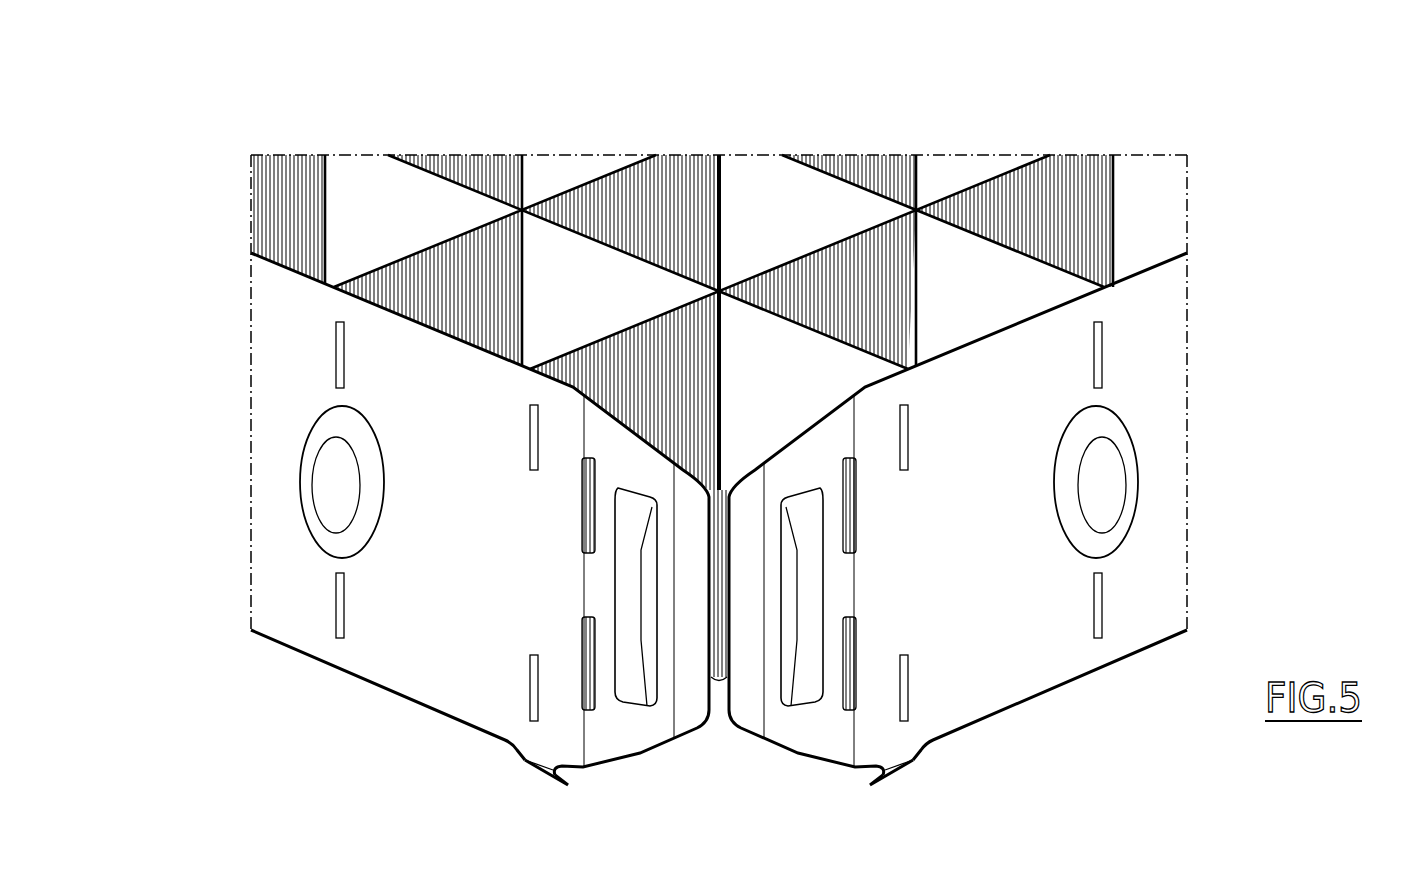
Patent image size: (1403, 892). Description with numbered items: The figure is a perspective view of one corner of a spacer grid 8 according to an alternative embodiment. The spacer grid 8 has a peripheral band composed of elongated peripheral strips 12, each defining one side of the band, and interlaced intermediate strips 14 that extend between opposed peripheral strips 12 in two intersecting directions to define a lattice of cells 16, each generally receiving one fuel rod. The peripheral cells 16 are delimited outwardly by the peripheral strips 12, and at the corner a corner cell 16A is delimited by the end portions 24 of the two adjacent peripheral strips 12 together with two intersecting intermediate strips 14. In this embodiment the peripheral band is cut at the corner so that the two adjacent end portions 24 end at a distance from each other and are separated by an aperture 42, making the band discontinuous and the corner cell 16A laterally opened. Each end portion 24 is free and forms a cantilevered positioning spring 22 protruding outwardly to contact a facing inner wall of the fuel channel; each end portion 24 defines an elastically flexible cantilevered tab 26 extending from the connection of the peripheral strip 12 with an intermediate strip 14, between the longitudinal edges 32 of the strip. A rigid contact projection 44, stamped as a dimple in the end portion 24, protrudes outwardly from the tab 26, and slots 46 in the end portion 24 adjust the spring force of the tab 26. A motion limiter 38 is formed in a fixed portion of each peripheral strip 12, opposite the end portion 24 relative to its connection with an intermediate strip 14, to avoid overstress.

The spacer grid 8 is at (446, 138).
The peripheral strip 12 is at (448, 693).
The intermediate strip 14 is at (753, 277).
The cell 16 is at (763, 183).
The corner cell 16A is at (668, 367).
The positioning spring 22 is at (678, 764).
The end portion 24 is at (638, 758).
The cantilevered tab 26 is at (610, 752).
The longitudinal edge 32 is at (415, 318).
The motion limiter 38 is at (323, 482).
The aperture 42 is at (717, 712).
The contact projection 44 is at (628, 595).
The slot 46 is at (587, 515).